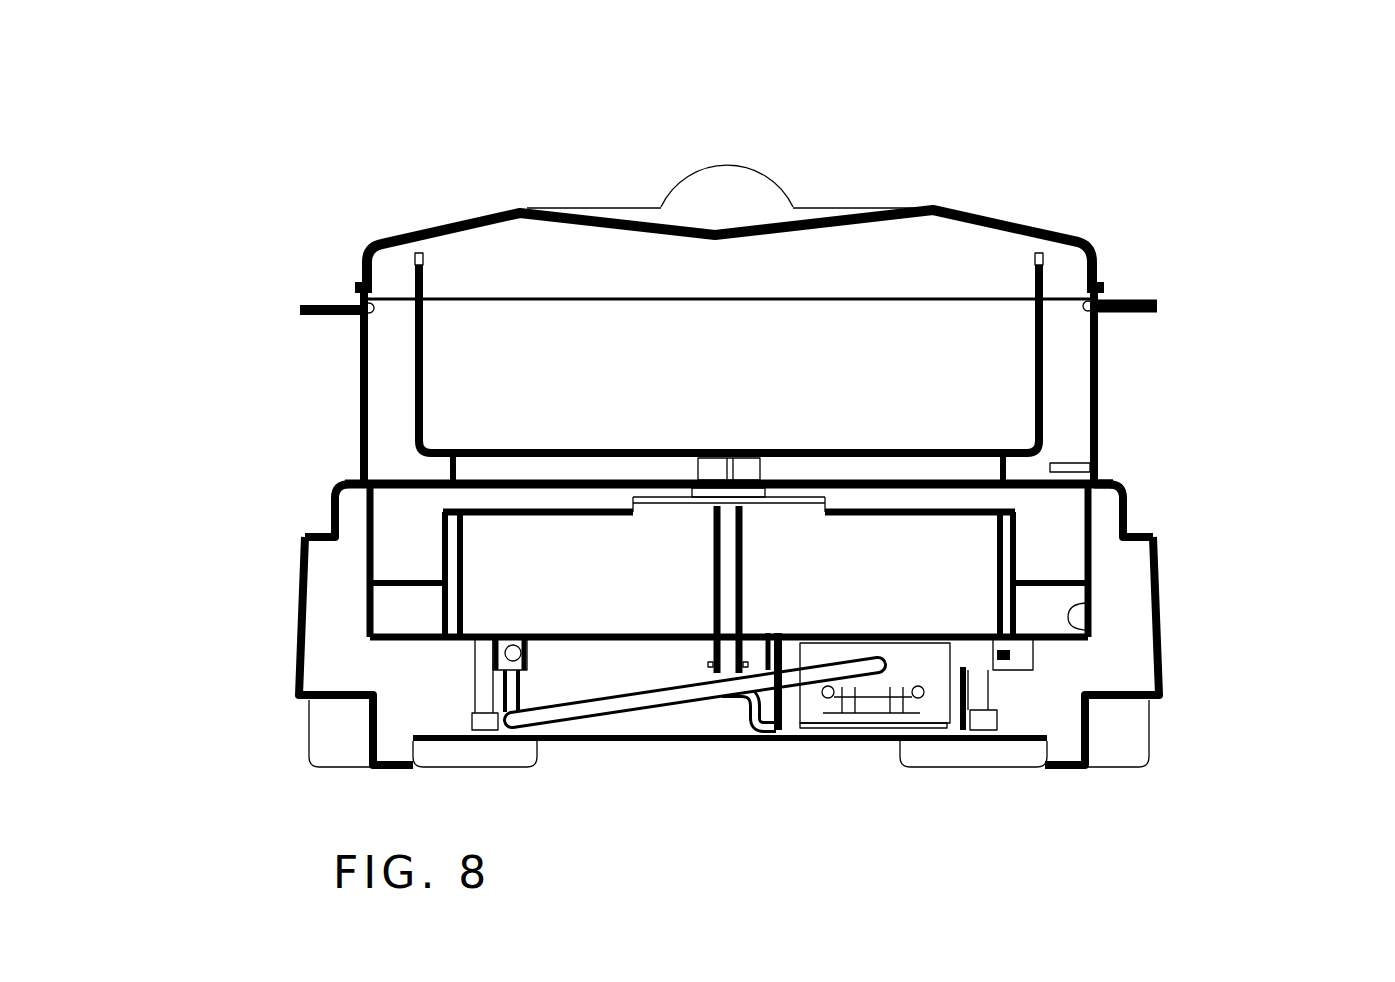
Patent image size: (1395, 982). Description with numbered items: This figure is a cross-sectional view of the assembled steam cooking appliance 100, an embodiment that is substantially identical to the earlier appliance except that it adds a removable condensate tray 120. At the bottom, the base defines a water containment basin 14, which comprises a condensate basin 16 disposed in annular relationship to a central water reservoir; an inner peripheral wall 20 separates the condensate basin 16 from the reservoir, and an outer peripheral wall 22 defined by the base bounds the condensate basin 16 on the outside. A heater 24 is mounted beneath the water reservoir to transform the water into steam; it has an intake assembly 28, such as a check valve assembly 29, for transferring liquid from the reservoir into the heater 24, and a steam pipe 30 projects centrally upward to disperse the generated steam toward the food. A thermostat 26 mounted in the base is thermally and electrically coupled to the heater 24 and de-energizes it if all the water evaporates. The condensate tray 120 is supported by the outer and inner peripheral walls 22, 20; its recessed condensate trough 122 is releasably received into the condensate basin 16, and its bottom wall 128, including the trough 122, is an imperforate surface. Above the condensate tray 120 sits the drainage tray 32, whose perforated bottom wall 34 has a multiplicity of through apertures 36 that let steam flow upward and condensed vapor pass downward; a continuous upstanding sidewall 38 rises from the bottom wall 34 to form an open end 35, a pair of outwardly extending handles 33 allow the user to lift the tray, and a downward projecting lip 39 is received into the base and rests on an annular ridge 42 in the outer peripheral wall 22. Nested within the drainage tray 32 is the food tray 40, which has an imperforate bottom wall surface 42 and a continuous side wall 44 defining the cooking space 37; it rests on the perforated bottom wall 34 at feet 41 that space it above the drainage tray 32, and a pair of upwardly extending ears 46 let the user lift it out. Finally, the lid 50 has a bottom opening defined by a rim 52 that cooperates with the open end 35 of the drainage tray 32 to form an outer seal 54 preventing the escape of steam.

The steam cooking appliance 100 is at (798, 128).
The lid 50 is at (1007, 222).
The cooking space 37 is at (487, 320).
The ears 46 is at (408, 266).
The rim 52 is at (362, 258).
The outer seal 54 is at (357, 287).
The open end 35 is at (367, 303).
The handles 33 is at (300, 313).
The side wall 44 is at (418, 363).
The food tray 40 is at (1040, 331).
The upstanding sidewall 38 is at (360, 401).
The drainage tray 32 is at (1098, 418).
The imperforate bottom wall surface 42 is at (449, 442).
The feet 41 is at (1050, 463).
The through apertures 36 is at (380, 458).
The perforated bottom wall 34 is at (1100, 470).
The downward projecting lip 39 is at (370, 503).
The water containment basin 14 is at (362, 518).
The removable condensate tray 120 is at (370, 548).
The recessed condensate trough 122 is at (377, 630).
The outer peripheral wall 22 is at (372, 640).
The condensate basin 16 is at (1060, 598).
The bottom wall 128 is at (373, 700).
The inner peripheral wall 20 is at (373, 702).
The steam pipe 30 is at (703, 603).
The intake assembly 28 is at (527, 700).
The check valve assembly 29 is at (523, 658).
The thermostat 26 is at (875, 710).
The heater 24 is at (937, 705).